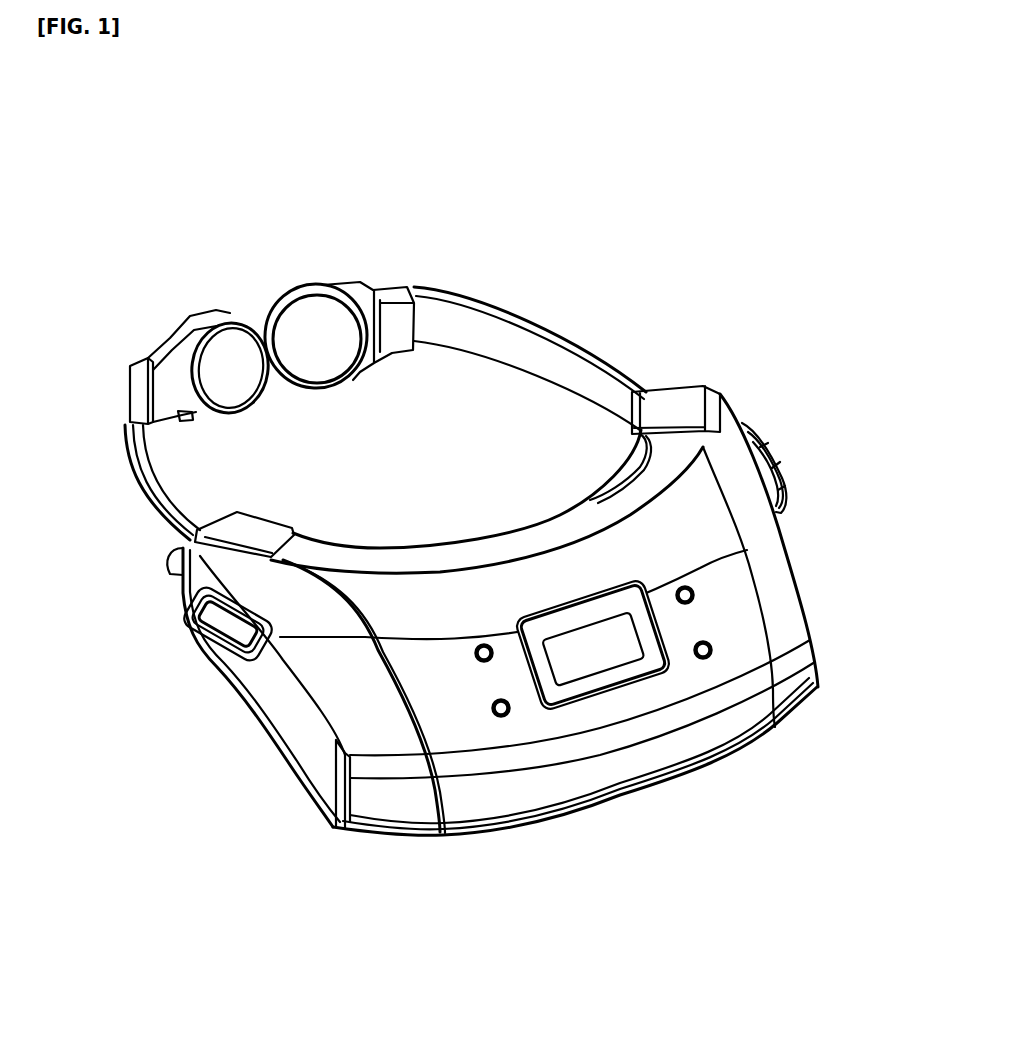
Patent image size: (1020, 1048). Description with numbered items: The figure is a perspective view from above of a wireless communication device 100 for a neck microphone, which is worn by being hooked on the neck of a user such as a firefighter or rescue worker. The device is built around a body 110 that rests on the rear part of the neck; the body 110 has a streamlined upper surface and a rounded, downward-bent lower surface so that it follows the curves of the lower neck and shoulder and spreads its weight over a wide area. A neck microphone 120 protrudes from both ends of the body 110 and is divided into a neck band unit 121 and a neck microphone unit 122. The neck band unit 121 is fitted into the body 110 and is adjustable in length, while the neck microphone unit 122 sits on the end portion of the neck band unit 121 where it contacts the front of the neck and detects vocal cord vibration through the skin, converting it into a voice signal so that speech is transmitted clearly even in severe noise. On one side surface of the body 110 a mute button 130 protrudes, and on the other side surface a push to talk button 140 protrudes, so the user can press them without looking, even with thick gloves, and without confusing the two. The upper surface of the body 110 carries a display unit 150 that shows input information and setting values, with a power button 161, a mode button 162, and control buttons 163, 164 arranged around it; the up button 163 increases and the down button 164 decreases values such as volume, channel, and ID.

The wireless communication device for a neck microphone 100 is at (128, 226).
The body 110 is at (777, 587).
The neck microphone 120 is at (425, 162).
The neck band unit 121 is at (420, 292).
The neck microphone unit 122 is at (320, 337).
The mute button 130 is at (219, 662).
The push to talk (PTT) button 140 is at (787, 463).
The display unit 150 is at (580, 666).
The power button 161 is at (695, 600).
The mode button 162 is at (710, 655).
The up button 163 is at (477, 660).
The down button 164 is at (501, 717).